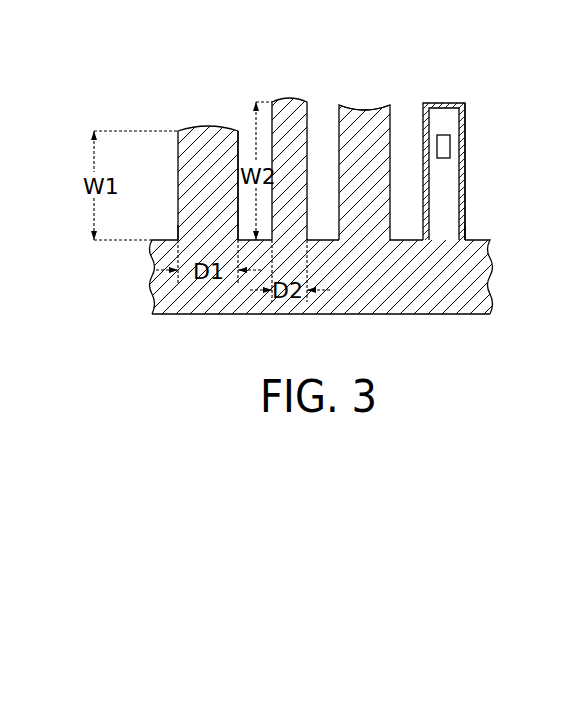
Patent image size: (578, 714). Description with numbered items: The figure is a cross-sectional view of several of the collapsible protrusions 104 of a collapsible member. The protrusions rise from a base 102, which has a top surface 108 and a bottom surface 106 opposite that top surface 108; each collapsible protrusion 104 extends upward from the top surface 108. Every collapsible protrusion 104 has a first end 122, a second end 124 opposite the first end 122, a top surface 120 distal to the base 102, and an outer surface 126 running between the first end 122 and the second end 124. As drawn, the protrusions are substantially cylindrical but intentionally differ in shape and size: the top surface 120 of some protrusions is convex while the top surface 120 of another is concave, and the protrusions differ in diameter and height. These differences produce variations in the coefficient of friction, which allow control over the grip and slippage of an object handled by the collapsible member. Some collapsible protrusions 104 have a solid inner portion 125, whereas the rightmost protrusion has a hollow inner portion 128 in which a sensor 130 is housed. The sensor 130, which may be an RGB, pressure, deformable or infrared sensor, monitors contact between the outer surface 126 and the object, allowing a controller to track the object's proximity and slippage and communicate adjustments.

The base 102 is at (490, 300).
The collapsible protrusion 104 is at (328, 143).
The bottom surface 106 is at (190, 314).
The top surface 108 is at (403, 239).
The top surface 120 is at (358, 143).
The first end 122 is at (239, 140).
The second end 124 is at (177, 237).
The solid inner portion 125 is at (343, 128).
The outer surface 126 is at (465, 170).
The hollow inner portion 128 is at (455, 216).
The sensor 130 is at (450, 146).